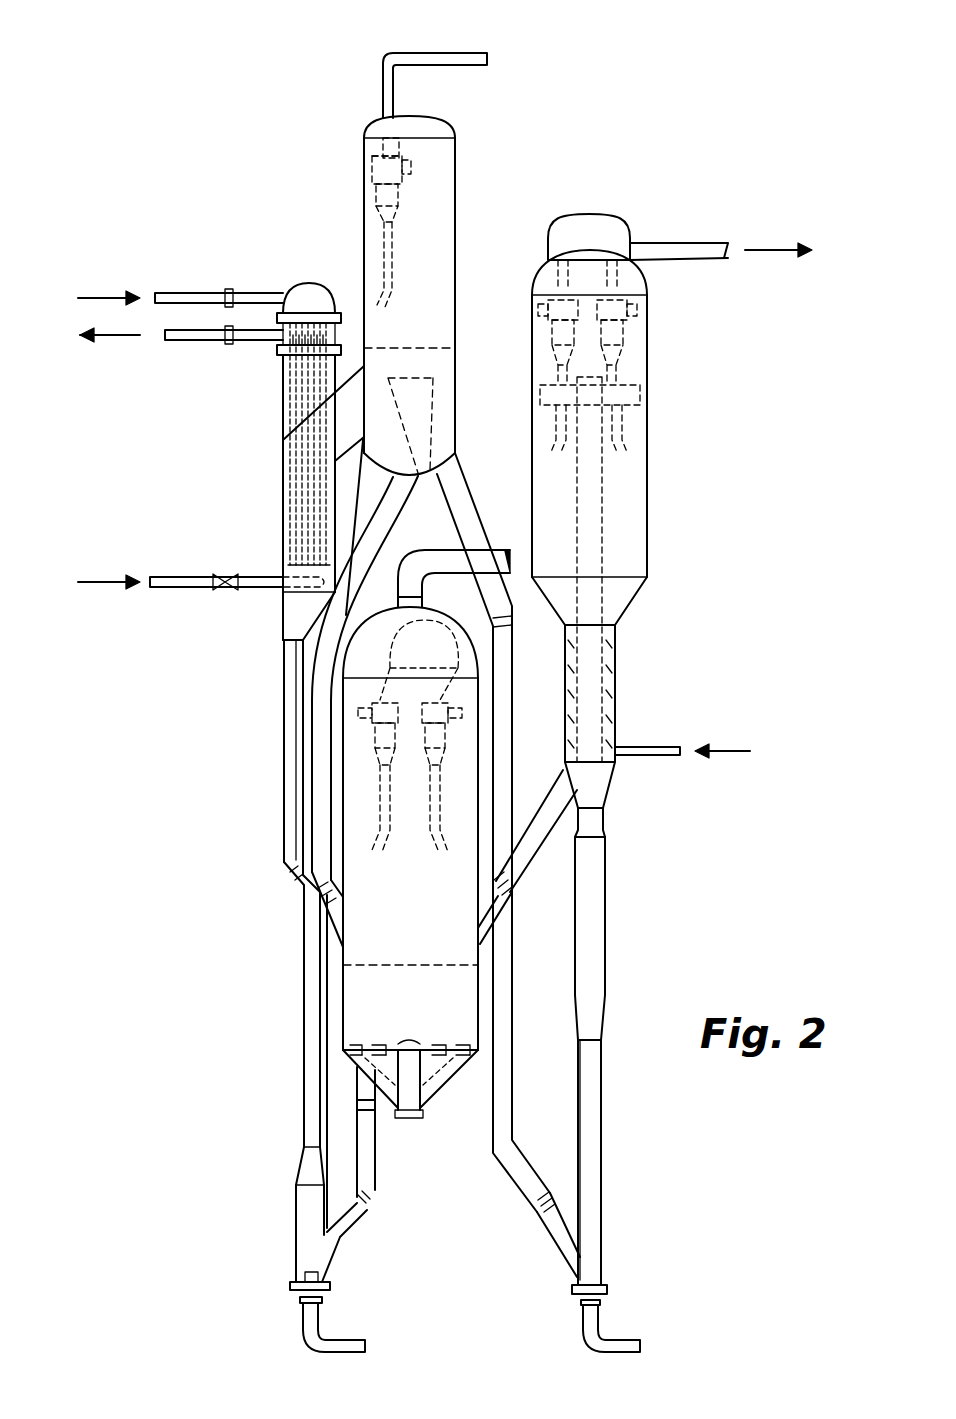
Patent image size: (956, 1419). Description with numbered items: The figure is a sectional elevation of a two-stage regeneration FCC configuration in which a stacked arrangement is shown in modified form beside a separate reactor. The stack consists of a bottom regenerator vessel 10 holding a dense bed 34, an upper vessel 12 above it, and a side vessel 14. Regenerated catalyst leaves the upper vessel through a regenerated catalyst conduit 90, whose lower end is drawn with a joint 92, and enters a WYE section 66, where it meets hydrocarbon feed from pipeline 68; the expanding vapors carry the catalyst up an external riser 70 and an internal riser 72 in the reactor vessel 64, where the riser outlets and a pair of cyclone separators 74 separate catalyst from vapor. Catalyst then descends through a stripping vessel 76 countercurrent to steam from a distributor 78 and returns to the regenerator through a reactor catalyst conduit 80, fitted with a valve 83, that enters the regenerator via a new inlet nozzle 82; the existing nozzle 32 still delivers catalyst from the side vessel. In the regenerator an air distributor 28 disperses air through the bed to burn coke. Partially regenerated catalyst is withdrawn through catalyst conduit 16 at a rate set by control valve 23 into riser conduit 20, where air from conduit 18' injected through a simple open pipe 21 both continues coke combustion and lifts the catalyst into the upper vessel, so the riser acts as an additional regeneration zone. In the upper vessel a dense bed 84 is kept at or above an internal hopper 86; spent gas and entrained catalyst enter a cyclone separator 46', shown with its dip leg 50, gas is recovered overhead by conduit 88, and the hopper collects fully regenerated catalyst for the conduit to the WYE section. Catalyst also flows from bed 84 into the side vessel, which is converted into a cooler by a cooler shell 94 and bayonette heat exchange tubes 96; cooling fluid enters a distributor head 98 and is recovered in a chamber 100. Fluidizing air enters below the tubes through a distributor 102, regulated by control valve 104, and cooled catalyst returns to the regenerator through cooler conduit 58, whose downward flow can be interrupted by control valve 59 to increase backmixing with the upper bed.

The regenerator vessel 10 is at (438, 919).
The upper vessel 12 is at (433, 294).
The side vessel 14 is at (283, 518).
The catalyst conduit 16 is at (376, 1150).
The air conduit 18' is at (362, 1327).
The riser conduit 20 is at (296, 1232).
The open pipe 21 is at (300, 1278).
The control valve 23 is at (366, 1210).
The air distributor 28 is at (415, 1045).
The nozzle 32 is at (322, 920).
The dense bed 34 is at (383, 999).
The cyclone separator 46' is at (435, 138).
The cyclone dipleg 50 is at (392, 246).
The cooler conduit 58 is at (284, 716).
The control valve 59 is at (284, 870).
The reactor vessel 64 is at (660, 500).
The WYE section 66 is at (560, 1262).
The pipeline 68 is at (600, 1330).
The external riser 70 is at (606, 878).
The internal riser 72 is at (600, 482).
The cyclone separators 74 is at (628, 328).
The stripping vessel 76 is at (616, 676).
The distributor 78 is at (610, 790).
The reactor catalyst conduit 80 is at (528, 860).
The inlet nozzle 82 is at (490, 935).
The valve 83 is at (506, 898).
The dense bed 84 is at (375, 404).
The internal hopper 86 is at (440, 410).
The conduit 88 is at (457, 53).
The regenerated catalyst conduit 90 is at (512, 690).
The joint 92 is at (540, 1212).
The cooler shell 94 is at (283, 392).
The heat exchange tubes 96 is at (312, 479).
The distributor head 98 is at (312, 283).
The chamber 100 is at (283, 342).
The distributor 102 is at (297, 597).
The control valve 104 is at (180, 599).